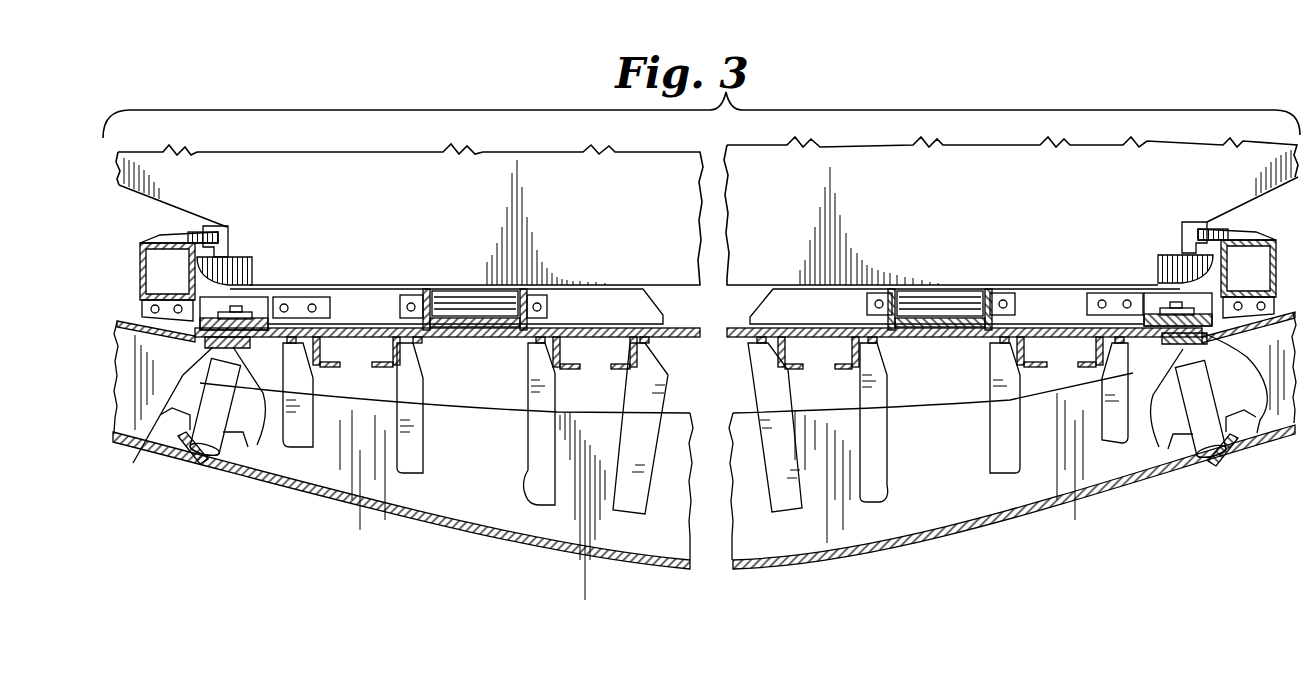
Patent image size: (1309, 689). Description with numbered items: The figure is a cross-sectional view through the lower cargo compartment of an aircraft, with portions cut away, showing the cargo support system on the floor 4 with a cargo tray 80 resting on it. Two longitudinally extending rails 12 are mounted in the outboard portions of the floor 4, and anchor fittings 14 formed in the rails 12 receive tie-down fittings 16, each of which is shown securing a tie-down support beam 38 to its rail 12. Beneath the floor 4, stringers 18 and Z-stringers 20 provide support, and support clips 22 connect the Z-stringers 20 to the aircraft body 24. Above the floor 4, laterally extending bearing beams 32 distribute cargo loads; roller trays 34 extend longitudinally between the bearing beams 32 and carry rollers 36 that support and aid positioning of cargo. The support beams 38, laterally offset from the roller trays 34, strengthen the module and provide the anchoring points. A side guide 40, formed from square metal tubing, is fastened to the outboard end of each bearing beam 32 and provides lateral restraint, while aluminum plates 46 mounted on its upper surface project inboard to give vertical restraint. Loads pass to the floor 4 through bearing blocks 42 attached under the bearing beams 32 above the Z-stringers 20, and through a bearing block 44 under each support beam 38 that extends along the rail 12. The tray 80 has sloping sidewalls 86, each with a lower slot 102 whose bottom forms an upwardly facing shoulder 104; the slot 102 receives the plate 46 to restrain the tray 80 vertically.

The floor 4 is at (658, 340).
The rail 12 is at (165, 427).
The anchor fitting 14 is at (257, 445).
The tie-down fitting 16 is at (243, 310).
The stringer 18 is at (208, 425).
The Z-stringer 20 is at (332, 398).
The support clip 22 is at (613, 515).
The aircraft body 24 is at (1020, 513).
The bearing beam 32 is at (573, 307).
The roller tray 34 is at (410, 297).
The roller 36 is at (465, 298).
The tie-down support beam 38 is at (283, 298).
The side guide 40 is at (165, 239).
The bearing block 42 is at (380, 298).
The bearing block 44 is at (190, 363).
The aluminum plate 46 is at (180, 243).
The cargo tray 80 is at (897, 150).
The sidewall 86 is at (150, 213).
The slot 102 is at (228, 232).
The shoulder 104 is at (233, 257).